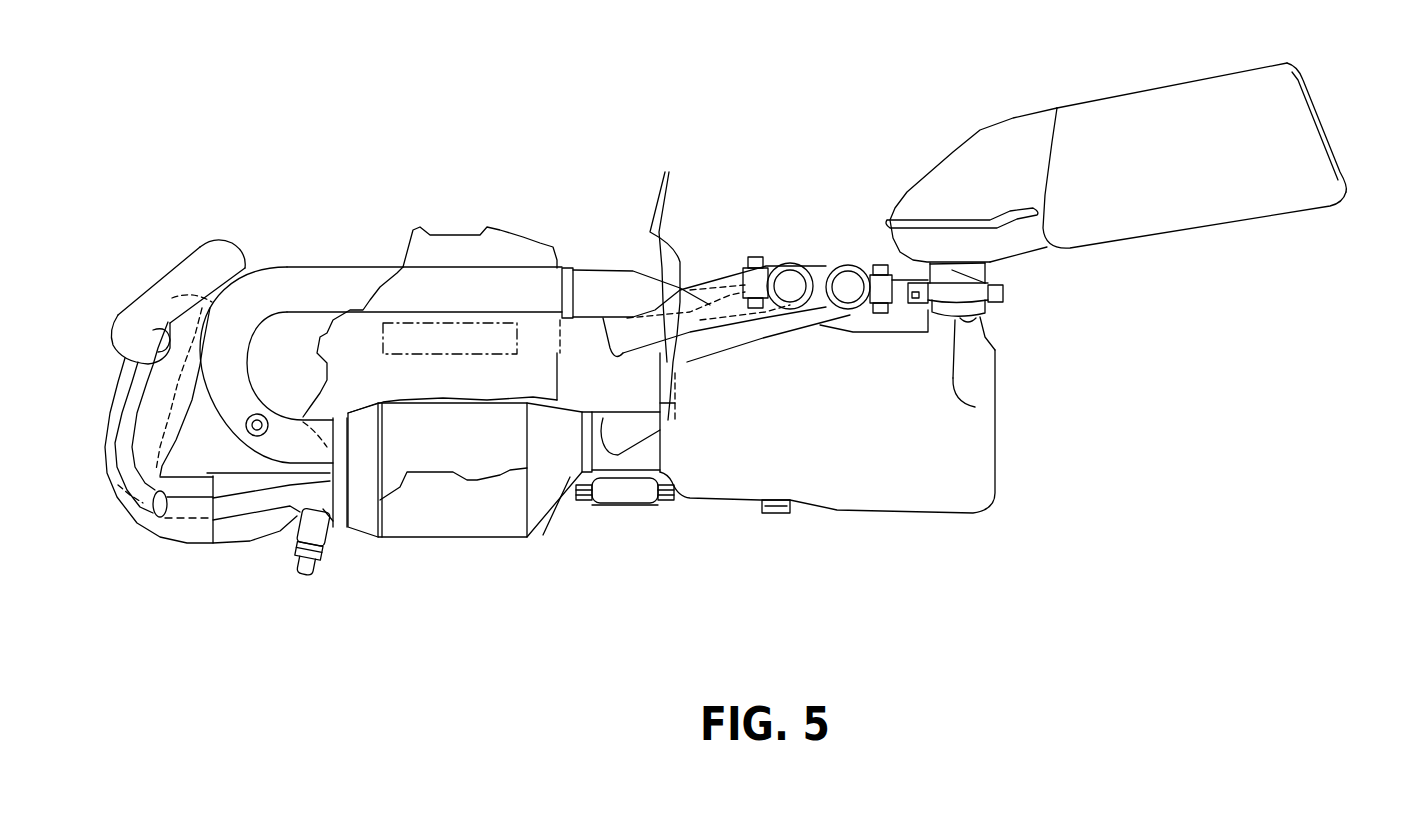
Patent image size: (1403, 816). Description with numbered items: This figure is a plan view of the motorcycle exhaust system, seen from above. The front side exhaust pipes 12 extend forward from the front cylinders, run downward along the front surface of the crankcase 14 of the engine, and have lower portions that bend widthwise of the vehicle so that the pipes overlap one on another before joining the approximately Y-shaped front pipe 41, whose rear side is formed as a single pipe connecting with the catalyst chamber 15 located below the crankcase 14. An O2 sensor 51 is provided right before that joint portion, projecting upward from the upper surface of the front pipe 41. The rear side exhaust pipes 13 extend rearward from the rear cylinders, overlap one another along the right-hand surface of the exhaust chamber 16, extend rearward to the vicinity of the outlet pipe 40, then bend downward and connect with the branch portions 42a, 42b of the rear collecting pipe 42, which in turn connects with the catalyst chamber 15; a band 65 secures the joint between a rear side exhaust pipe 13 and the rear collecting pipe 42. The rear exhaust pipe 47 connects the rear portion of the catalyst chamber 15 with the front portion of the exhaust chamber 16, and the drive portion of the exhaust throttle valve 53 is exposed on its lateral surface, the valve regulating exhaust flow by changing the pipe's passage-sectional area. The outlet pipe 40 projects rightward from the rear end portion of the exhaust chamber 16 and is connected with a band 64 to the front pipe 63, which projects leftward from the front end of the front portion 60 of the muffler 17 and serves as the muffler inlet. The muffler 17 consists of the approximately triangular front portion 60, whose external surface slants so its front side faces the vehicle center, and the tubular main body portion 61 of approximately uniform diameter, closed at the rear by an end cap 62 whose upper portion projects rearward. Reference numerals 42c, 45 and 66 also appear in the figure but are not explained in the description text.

The front side exhaust pipes 12 is at (112, 321).
The rear side exhaust pipes 13 is at (669, 282).
The crankcase 14 is at (422, 220).
The catalyst chamber 15 is at (447, 537).
The exhaust chamber 16 is at (837, 505).
The muffler 17 is at (1190, 243).
The outlet pipe 40 is at (988, 310).
The front pipe 41 is at (237, 545).
The rear collecting pipe 42 is at (325, 265).
The branch portion 42a is at (786, 262).
The branch portion 42b is at (832, 264).
The hidden pipe portion 42c is at (643, 362).
The oxygen sensor 45 is at (477, 330).
The rear exhaust pipe 47 is at (653, 455).
The O2 sensor 51 is at (323, 545).
The exhaust throttle valve 53 is at (625, 495).
The front portion 60 is at (980, 141).
The main body portion 61 is at (1193, 97).
The end cap 62 is at (1313, 93).
The front pipe 63 is at (987, 269).
The band 64 is at (975, 407).
The band 65 is at (888, 264).
The outlet cone 66 is at (550, 533).